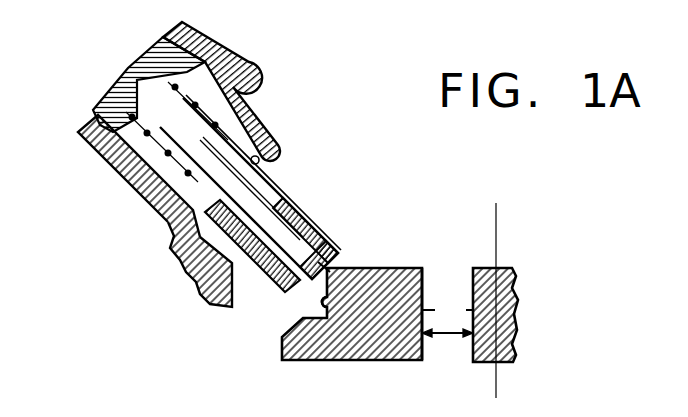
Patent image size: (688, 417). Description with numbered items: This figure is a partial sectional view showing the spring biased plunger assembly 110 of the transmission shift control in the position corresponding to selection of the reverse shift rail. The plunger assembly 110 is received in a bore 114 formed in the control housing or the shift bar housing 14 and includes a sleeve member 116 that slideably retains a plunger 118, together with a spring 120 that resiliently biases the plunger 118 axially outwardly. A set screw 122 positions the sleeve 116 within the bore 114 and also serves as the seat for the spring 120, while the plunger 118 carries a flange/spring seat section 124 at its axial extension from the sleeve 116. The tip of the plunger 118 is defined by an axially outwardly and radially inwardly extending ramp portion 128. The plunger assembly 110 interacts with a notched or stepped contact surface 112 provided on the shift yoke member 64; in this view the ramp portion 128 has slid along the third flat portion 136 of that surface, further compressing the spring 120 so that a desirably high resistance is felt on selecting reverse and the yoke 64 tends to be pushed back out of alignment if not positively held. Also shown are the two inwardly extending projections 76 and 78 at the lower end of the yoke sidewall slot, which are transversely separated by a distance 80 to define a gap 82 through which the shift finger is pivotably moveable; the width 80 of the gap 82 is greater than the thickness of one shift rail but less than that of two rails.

The spring biased plunger assembly 110 is at (330, 106).
The spring 120 is at (223, 63).
The set screw 122 is at (114, 98).
The shift bar housing 14 is at (134, 190).
The flange/spring seat section 124 is at (172, 231).
The sleeve member 116 is at (320, 232).
The plunger 118 is at (282, 230).
The bore 114 is at (252, 157).
The ramp portion 128 is at (333, 268).
The notched contact surface 112 is at (335, 281).
The shift yoke member 64 is at (398, 258).
The third flat portion 136 is at (327, 306).
The inwardly extending projection 78 is at (424, 292).
The inwardly extending projection 76 is at (477, 292).
The gap 82 is at (447, 310).
The width of gap 80 is at (447, 336).